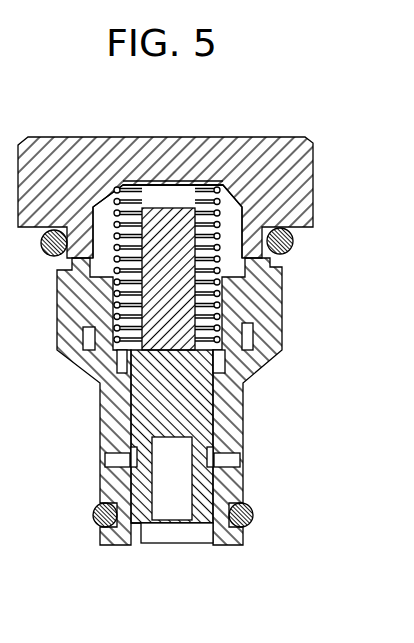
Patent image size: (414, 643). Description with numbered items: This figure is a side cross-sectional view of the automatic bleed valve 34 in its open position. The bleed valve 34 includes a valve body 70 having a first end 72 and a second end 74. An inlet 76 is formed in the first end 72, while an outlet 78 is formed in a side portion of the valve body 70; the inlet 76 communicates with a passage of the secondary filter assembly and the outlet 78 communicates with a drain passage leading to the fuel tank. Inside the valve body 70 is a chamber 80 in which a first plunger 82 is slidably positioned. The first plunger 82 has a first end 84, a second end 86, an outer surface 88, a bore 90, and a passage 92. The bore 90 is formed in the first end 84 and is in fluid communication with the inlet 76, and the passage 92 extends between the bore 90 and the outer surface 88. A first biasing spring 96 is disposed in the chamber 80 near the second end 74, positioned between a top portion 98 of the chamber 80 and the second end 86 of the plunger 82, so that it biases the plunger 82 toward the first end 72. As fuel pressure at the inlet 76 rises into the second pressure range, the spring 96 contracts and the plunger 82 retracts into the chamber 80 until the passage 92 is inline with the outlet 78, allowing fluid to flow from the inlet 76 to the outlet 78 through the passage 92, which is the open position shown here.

The automatic bleed valve 34 is at (282, 98).
The valve body 70 is at (258, 404).
The first end 72 is at (237, 543).
The second end 74 is at (268, 134).
The inlet 76 is at (187, 545).
The outlet 78 is at (102, 462).
The chamber 80 is at (230, 228).
The first plunger 82 is at (228, 338).
The first end 84 is at (140, 523).
The second end 86 is at (173, 210).
The outer surface 88 is at (100, 446).
The bore 90 is at (170, 478).
The passage 92 is at (140, 435).
The first biasing spring 96 is at (117, 205).
The top portion 98 is at (133, 195).